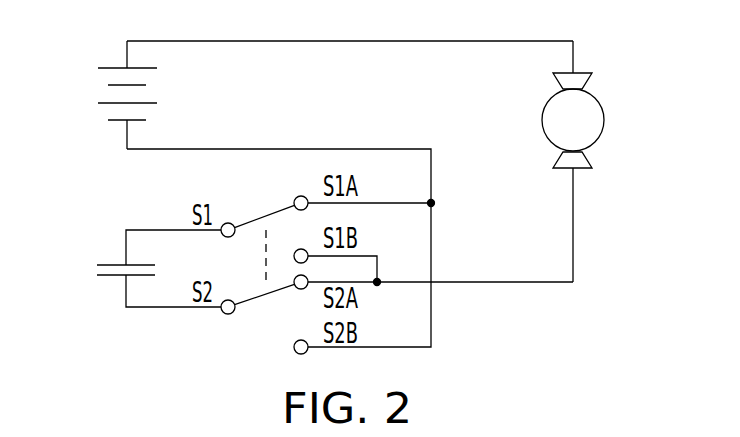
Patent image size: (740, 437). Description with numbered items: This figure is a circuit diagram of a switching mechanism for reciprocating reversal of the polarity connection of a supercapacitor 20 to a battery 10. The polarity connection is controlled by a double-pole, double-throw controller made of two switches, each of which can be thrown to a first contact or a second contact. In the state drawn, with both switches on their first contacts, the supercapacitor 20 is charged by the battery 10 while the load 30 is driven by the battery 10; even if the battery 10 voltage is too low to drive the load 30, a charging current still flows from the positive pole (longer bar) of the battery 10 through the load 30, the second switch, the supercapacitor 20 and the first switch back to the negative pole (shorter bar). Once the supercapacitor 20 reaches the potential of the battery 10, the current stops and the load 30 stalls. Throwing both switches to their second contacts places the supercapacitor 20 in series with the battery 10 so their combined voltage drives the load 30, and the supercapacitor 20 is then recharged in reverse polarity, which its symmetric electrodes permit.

The battery 10 is at (93, 79).
The supercapacitor 20 is at (106, 250).
The load 30 is at (588, 122).